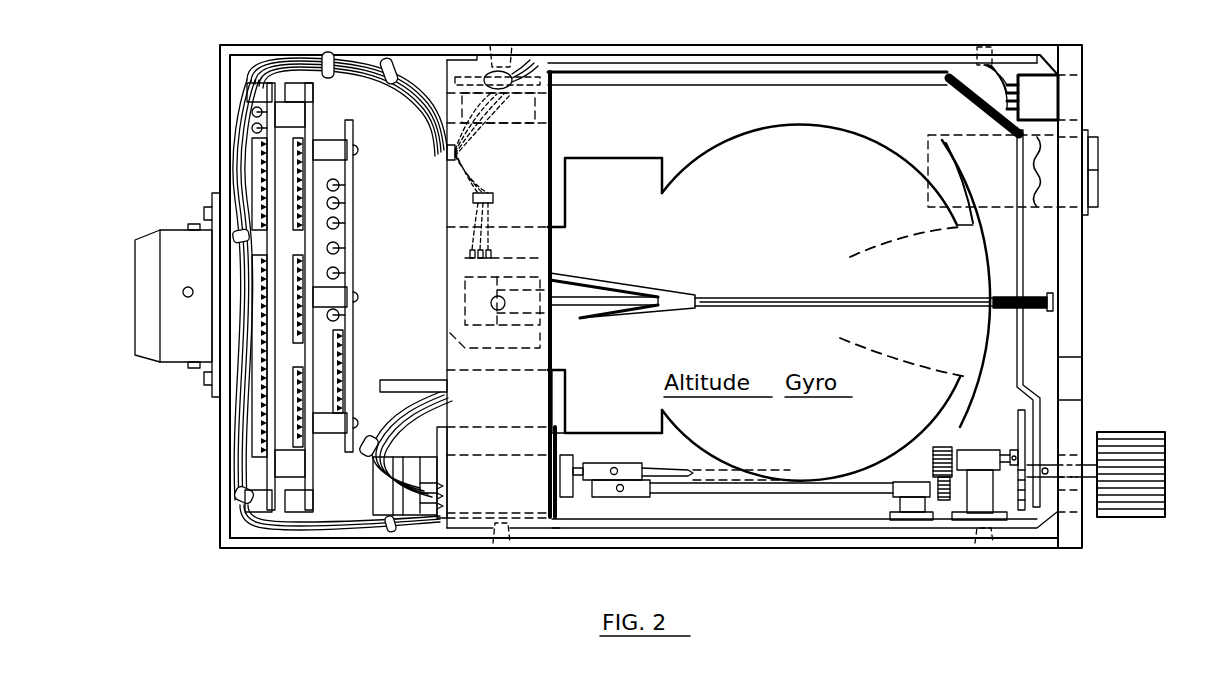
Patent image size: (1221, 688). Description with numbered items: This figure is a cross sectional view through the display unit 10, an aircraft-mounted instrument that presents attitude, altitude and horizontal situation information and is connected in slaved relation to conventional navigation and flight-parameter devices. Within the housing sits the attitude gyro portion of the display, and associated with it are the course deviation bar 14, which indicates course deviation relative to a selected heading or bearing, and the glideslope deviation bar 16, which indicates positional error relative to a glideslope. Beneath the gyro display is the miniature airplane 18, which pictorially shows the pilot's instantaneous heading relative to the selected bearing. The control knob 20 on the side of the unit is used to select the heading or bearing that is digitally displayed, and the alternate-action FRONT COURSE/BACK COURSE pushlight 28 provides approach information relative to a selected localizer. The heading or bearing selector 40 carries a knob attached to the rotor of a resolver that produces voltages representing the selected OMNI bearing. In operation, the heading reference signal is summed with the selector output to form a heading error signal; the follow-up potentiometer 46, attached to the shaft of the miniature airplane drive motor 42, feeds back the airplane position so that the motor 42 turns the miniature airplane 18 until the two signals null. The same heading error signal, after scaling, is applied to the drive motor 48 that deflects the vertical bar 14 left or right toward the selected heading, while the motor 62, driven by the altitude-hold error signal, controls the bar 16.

The display unit 10 is at (184, 460).
The course deviation bar 14 is at (1022, 245).
The glideslope deviation bar 16 is at (1053, 300).
The miniature airplane 18 is at (1017, 428).
The control knob 20 is at (1130, 443).
The FRONT COURSE/BACK COURSE pushlight 28 is at (1100, 158).
The heading/bearing selector 40 is at (560, 442).
The miniature airplane drive motor 42 is at (567, 505).
The follow-up potentiometer 46 is at (385, 500).
The drive motor 48 is at (548, 100).
The motor 62 is at (553, 275).